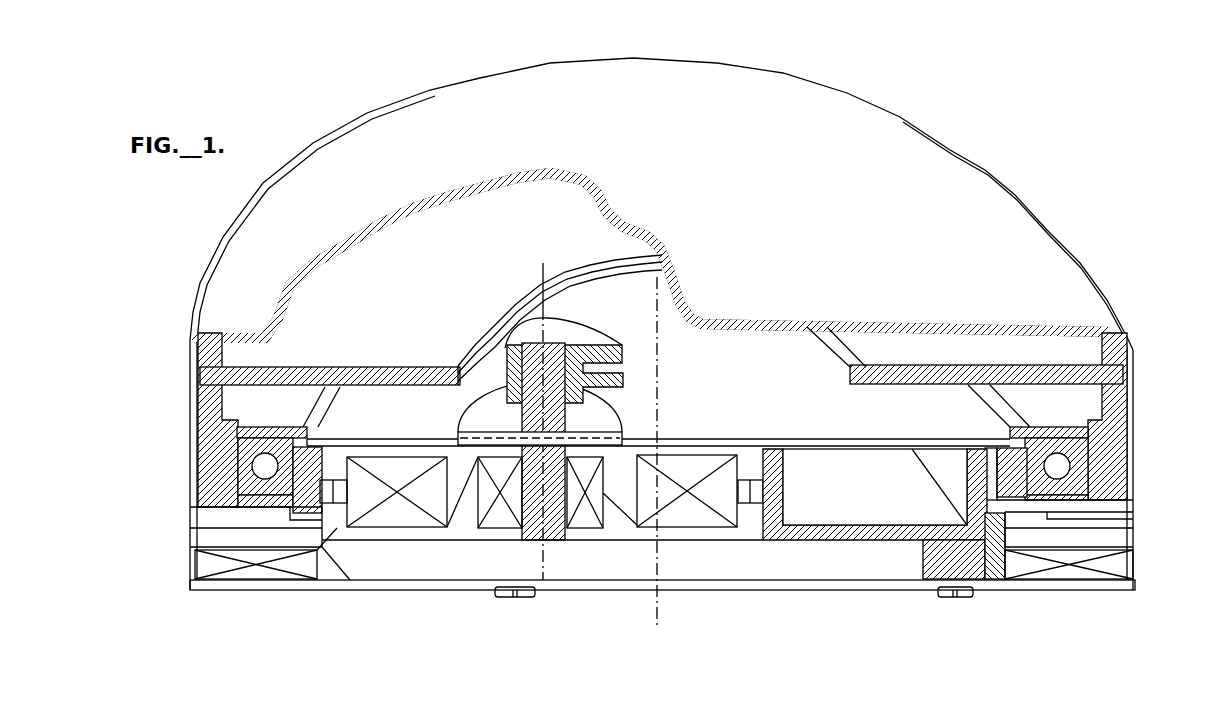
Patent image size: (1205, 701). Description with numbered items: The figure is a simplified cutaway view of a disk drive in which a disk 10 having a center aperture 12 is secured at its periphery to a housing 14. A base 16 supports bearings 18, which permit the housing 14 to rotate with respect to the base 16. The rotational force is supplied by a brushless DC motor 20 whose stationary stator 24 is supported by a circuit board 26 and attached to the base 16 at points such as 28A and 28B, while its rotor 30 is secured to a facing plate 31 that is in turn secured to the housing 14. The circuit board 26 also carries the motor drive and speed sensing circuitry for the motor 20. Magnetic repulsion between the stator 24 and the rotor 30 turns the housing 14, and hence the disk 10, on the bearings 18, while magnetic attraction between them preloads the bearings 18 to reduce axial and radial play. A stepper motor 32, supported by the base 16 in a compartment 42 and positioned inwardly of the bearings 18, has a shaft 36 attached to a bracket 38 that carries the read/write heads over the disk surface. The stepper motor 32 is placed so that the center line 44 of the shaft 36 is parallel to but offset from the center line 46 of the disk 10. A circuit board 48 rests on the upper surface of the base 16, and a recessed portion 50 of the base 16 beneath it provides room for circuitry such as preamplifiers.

The disk 10 is at (400, 367).
The center aperture 12 is at (597, 288).
The housing 14 is at (950, 168).
The base 16 is at (928, 553).
The bearings 18 is at (192, 503).
The brushless DC motor 20 is at (187, 548).
The stationary stator 24 is at (203, 562).
The circuit board 26 is at (730, 583).
The attachment point 28A is at (927, 590).
The attachment point 28B is at (492, 589).
The rotor 30 is at (200, 537).
The facing plate 31 is at (290, 522).
The stepper motor 32 is at (708, 452).
The shaft 36 is at (562, 420).
The bracket 38 is at (585, 333).
The compartment 42 is at (767, 550).
The center line 44 is at (543, 275).
The center line 46 is at (658, 355).
The circuit board 48 is at (788, 440).
The recessed portion 50 is at (863, 492).